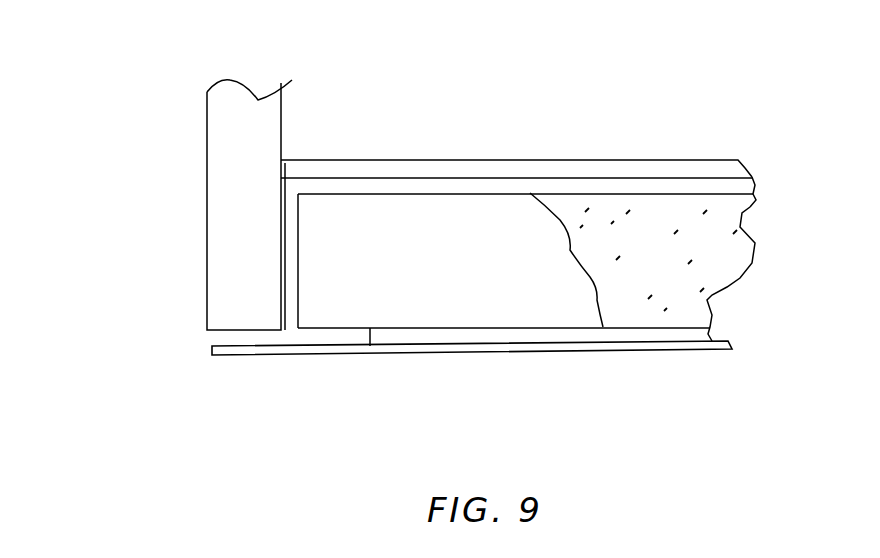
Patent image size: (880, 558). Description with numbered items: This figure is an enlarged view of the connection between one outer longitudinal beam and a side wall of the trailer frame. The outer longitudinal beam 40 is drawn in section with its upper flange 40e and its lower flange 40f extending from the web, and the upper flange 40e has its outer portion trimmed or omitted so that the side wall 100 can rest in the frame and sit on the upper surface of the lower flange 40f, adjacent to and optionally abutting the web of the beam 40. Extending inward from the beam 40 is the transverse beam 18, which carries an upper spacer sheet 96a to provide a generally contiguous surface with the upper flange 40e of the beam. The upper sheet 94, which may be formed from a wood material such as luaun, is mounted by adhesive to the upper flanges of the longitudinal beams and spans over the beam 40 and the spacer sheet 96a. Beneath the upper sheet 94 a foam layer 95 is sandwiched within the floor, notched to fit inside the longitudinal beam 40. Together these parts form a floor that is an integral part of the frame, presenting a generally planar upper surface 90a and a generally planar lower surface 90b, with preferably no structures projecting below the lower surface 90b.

The side wall 100 is at (207, 147).
The longitudinal beam 40 is at (353, 180).
The upper flange 40e is at (325, 187).
The lower flange 40f is at (330, 340).
The upper surface 90a is at (417, 163).
The lower surface 90b is at (427, 355).
The upper sheet 94 is at (528, 165).
The upper spacer sheet 96a is at (645, 187).
The transverse beam 18 is at (548, 308).
The foam layer 95 is at (675, 297).